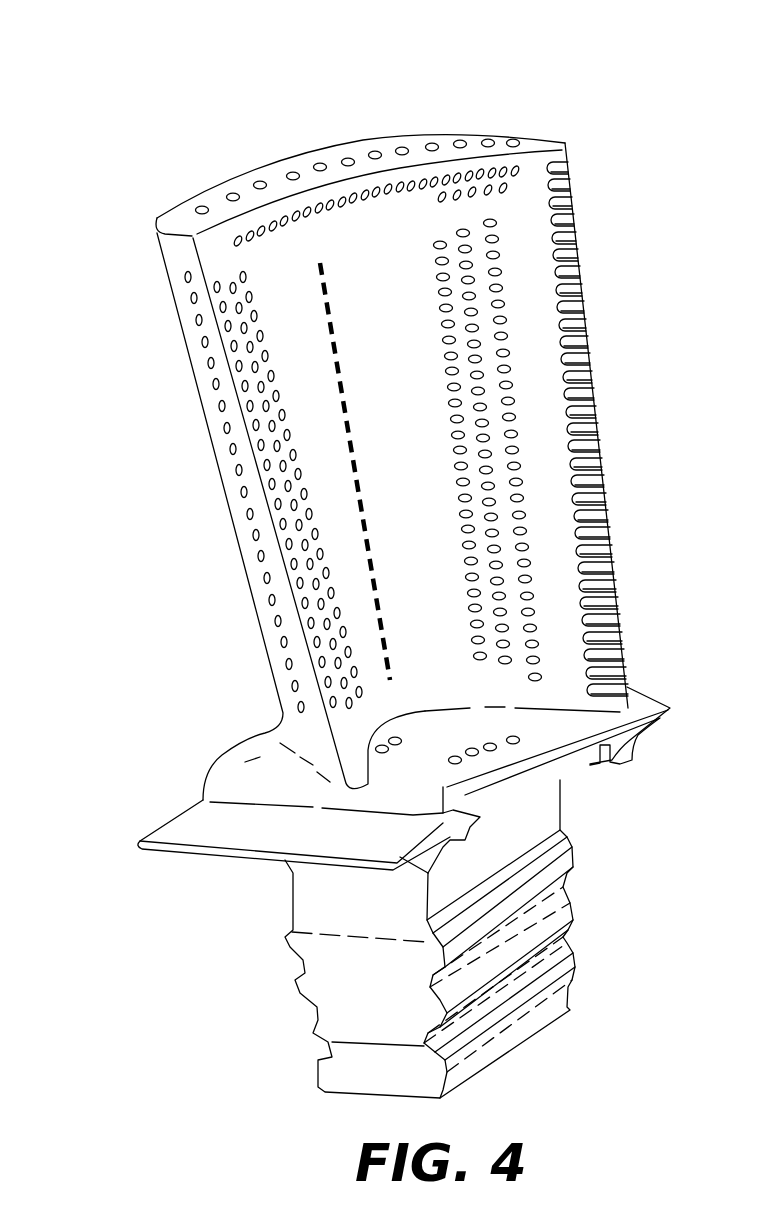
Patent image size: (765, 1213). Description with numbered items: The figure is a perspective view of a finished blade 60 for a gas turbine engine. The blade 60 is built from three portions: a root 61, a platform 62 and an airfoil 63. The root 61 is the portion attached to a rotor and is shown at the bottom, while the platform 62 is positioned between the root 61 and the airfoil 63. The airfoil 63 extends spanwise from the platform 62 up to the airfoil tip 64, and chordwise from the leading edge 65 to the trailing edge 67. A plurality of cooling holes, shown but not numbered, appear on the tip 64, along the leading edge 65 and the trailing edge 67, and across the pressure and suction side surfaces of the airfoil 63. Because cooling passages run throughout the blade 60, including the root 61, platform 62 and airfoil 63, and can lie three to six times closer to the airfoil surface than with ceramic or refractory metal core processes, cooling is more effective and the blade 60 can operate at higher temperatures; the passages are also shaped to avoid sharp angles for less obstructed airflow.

The blade 60 is at (163, 101).
The root 61 is at (580, 898).
The platform 62 is at (640, 697).
The airfoil 63 is at (523, 207).
The airfoil tip 64 is at (353, 153).
The leading edge 65 is at (217, 380).
The trailing edge 67 is at (583, 325).